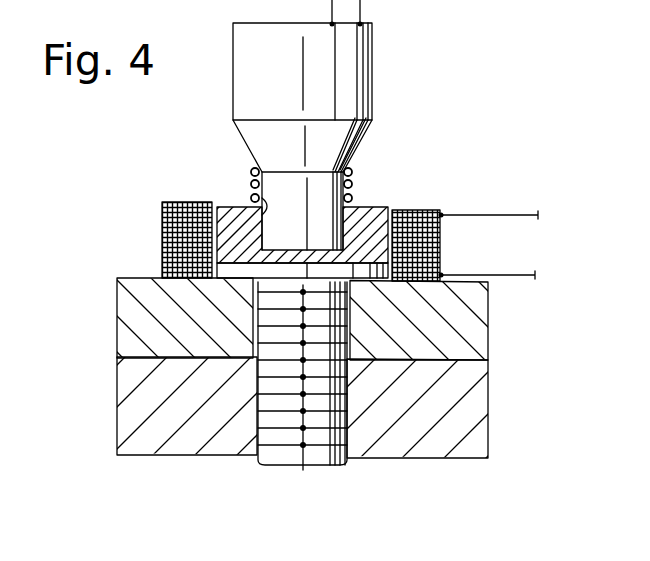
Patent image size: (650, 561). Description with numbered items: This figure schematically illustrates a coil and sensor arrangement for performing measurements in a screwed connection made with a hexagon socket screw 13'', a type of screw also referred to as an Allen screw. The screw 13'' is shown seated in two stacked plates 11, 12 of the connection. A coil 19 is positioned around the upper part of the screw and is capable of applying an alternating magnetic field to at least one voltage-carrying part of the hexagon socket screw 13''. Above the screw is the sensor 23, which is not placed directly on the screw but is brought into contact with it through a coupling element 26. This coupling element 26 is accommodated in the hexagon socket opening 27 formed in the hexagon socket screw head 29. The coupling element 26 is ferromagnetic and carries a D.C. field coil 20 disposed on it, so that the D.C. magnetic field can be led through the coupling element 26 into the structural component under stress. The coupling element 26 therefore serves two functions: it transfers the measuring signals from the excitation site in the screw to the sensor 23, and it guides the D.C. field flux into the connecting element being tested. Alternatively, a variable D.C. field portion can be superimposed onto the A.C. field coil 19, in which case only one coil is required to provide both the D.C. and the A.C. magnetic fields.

The sensor 23 is at (374, 64).
The coupling element 26 is at (352, 166).
The hexagon socket opening 27 is at (255, 200).
The D.C. field coil 20 is at (355, 189).
The hexagon socket screw head 29 is at (211, 202).
The coil 19 is at (436, 210).
The upper plate 11 is at (472, 323).
The lower plate 12 is at (472, 402).
The hexagon socket screw 13'' is at (303, 397).